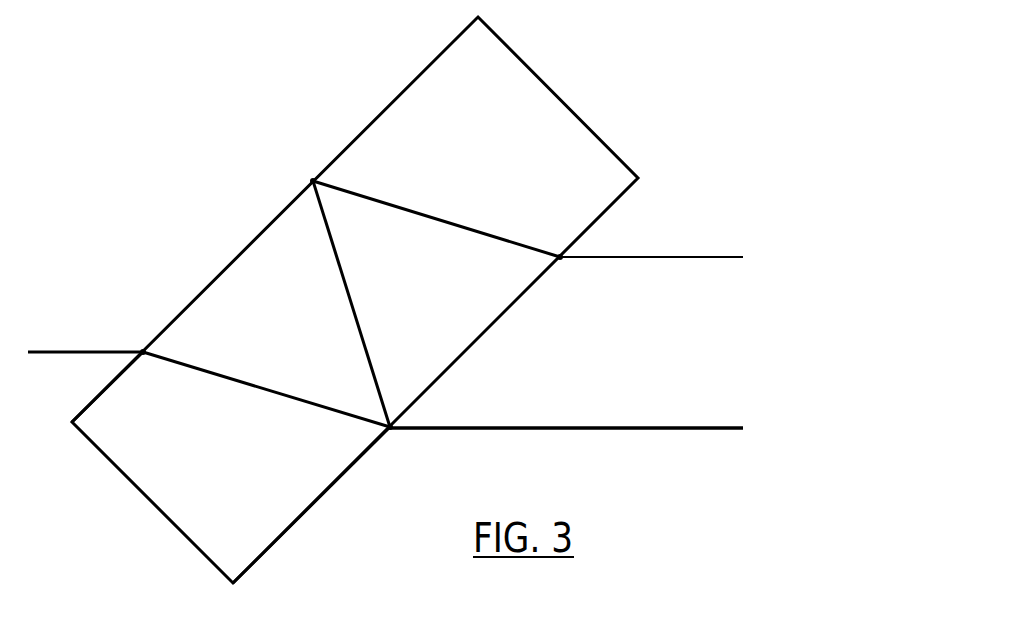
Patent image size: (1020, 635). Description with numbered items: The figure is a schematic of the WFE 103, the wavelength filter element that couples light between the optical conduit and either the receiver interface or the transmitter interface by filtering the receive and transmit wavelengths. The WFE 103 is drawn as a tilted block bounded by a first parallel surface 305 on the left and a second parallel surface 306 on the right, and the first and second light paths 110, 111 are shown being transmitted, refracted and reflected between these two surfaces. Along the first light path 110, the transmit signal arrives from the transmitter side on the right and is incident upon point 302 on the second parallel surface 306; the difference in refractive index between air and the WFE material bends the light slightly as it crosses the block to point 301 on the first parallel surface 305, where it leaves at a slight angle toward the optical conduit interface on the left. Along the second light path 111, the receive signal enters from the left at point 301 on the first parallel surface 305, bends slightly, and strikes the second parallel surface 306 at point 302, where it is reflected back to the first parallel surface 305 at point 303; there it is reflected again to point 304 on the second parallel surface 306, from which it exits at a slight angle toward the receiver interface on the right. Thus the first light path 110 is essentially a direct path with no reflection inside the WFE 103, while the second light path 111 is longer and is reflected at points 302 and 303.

The WFE 103 is at (577, 66).
The first light path 110 is at (245, 380).
The second light path 111 is at (426, 214).
The point on the first parallel surface 301 is at (142, 351).
The point on the second parallel surface 302 is at (391, 430).
The point on the first parallel surface 303 is at (311, 180).
The point on the second parallel surface 304 is at (561, 259).
The first parallel surface 305 is at (82, 407).
The second parallel surface 306 is at (262, 565).